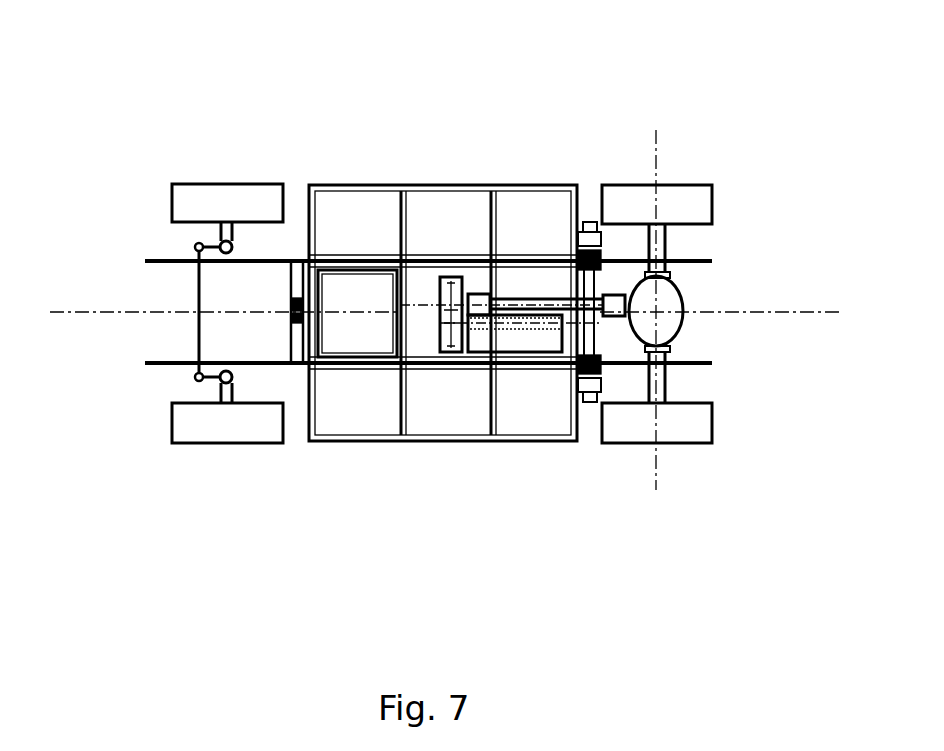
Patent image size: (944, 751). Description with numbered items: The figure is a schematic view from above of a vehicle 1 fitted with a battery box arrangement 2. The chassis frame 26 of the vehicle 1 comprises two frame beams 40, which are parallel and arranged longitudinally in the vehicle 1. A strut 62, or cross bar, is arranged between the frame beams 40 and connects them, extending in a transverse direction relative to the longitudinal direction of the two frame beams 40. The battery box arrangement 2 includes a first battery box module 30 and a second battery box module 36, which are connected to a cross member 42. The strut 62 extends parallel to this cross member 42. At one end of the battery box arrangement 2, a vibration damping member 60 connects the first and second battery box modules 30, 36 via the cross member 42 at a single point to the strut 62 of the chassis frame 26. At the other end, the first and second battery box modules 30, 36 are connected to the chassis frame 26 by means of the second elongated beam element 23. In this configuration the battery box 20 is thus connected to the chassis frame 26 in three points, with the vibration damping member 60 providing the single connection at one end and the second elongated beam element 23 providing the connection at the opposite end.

The vehicle 1 is at (285, 124).
The battery box arrangement 2 is at (487, 474).
The battery box 20 is at (392, 441).
The second elongated beam element 23 is at (598, 332).
The chassis frame 26 is at (710, 262).
The first battery box module 30 is at (438, 441).
The second battery box module 36 is at (453, 185).
The frame beams 40 is at (145, 262).
The cross member 42 is at (300, 265).
The vibration damping member 60 is at (288, 305).
The strut 62 is at (288, 353).